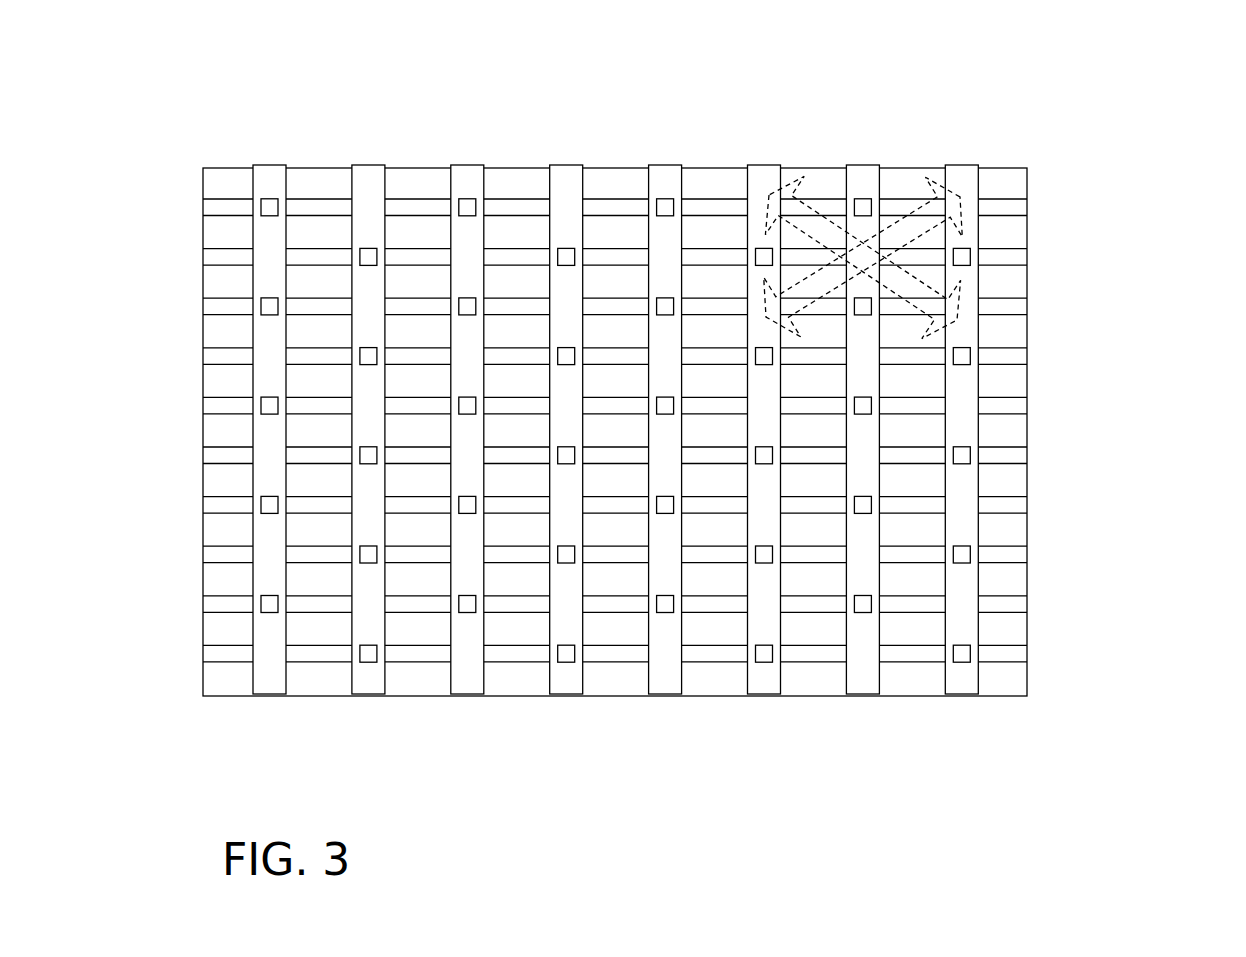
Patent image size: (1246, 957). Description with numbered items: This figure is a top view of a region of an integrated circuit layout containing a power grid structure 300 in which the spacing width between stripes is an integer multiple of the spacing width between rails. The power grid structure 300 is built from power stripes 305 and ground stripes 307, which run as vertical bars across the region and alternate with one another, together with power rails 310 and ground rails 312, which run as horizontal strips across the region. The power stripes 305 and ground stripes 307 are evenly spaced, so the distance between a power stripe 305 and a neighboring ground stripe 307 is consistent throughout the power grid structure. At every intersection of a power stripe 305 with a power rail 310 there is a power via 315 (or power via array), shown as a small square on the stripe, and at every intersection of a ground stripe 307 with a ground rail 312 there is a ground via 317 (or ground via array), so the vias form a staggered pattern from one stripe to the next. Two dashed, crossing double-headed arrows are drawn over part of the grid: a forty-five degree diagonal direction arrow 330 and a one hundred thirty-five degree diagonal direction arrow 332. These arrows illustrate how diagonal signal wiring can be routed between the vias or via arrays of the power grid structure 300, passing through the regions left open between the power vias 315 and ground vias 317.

The power grid structure 300 is at (668, 364).
The power stripe 305 is at (267, 165).
The ground stripe 307 is at (365, 165).
The power rail 310 is at (203, 207).
The ground rail 312 is at (203, 260).
The power via 315 is at (268, 297).
The ground via 317 is at (367, 265).
The 45° diagonal direction arrow 330 is at (960, 212).
The 135° diagonal direction arrow 332 is at (960, 293).